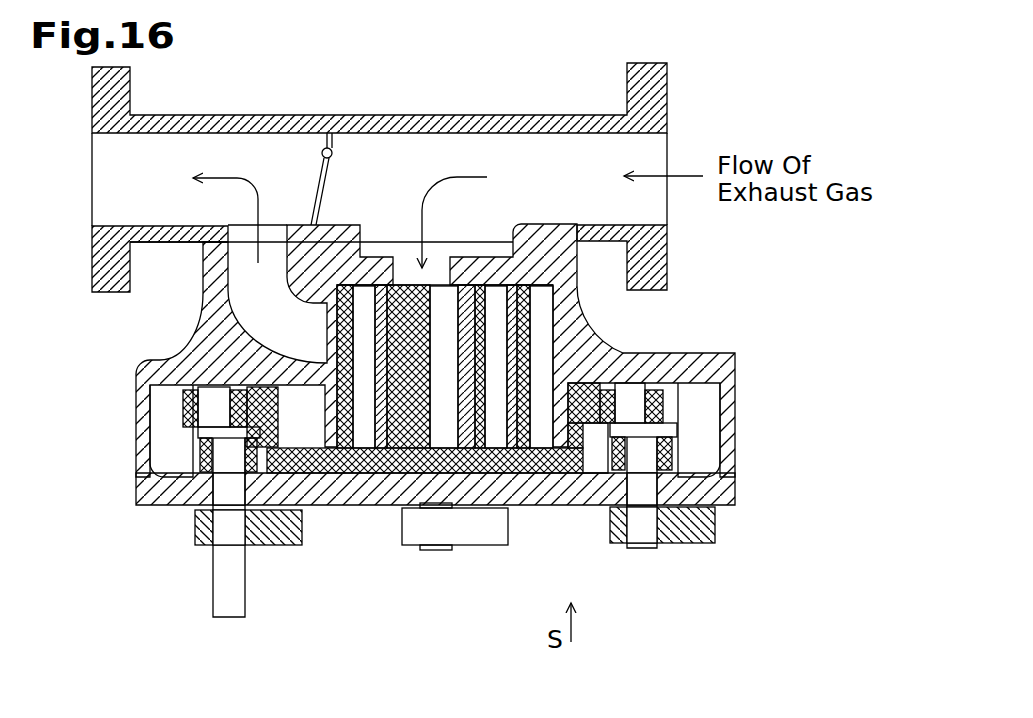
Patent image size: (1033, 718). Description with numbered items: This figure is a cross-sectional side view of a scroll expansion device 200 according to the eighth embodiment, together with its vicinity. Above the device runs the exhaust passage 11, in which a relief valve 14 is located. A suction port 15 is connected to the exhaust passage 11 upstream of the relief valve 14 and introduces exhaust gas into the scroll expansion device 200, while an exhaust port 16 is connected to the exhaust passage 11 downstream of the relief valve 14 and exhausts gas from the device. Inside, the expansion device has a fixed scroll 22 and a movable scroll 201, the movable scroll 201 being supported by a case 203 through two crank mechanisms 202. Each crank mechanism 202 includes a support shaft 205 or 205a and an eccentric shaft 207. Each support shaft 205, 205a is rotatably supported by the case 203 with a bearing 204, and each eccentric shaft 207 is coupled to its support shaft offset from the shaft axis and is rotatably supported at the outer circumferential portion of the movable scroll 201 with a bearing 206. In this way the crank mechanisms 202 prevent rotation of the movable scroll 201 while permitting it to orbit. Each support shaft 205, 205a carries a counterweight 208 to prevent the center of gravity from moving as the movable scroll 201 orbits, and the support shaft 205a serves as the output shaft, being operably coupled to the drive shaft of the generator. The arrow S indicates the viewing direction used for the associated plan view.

The exhaust passage 11 is at (504, 134).
The relief valve 14 is at (318, 140).
The suction port 15 is at (400, 263).
The exhaust port 16 is at (218, 263).
The fixed scroll 22 is at (470, 420).
The scroll expansion device 200 is at (124, 377).
The movable scroll 201 is at (368, 473).
The crank mechanism 202 is at (177, 462).
The case 203 is at (161, 507).
The bearing 204 is at (198, 450).
The support shaft 205 is at (435, 552).
The support shaft 205a is at (218, 597).
The bearing 206 is at (185, 408).
The eccentric shaft 207 is at (213, 392).
The counterweight 208 is at (287, 546).